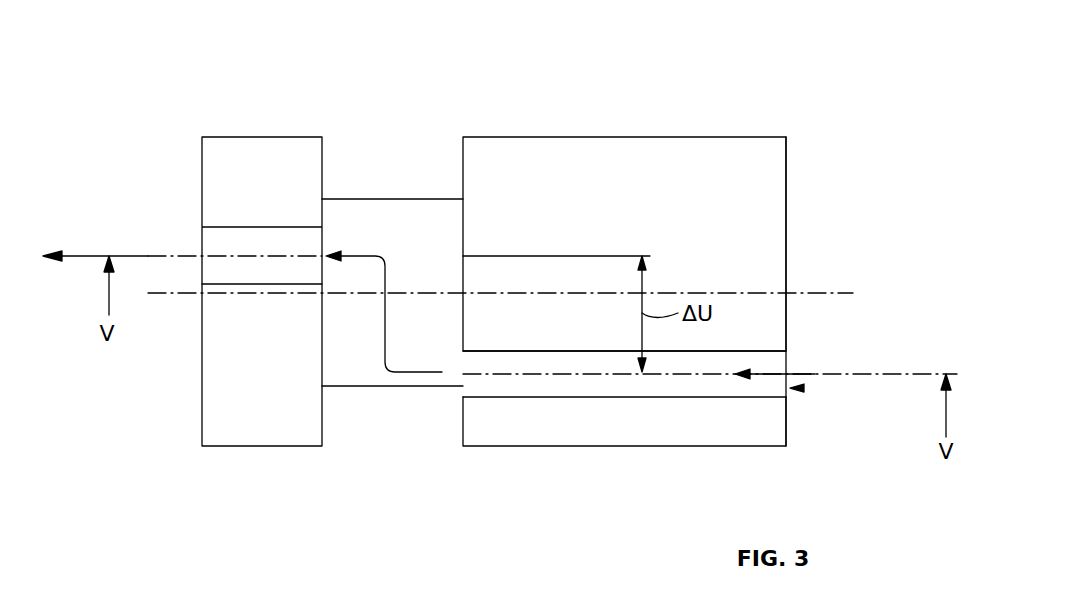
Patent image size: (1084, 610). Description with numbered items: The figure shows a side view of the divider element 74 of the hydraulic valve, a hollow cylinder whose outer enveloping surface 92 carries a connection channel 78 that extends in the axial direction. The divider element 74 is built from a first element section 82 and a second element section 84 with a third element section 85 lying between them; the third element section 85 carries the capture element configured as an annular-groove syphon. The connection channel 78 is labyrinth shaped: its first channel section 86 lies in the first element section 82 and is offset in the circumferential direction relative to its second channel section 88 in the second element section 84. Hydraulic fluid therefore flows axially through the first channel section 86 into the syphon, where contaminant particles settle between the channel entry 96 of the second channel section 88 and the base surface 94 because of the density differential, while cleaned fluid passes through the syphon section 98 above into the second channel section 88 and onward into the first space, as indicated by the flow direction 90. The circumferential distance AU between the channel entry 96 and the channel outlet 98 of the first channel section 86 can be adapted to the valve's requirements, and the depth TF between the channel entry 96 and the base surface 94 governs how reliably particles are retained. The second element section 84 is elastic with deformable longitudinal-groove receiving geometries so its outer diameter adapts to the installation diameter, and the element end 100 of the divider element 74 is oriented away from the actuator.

The divider element 74 is at (880, 142).
The connection channel 78 is at (804, 388).
The first element section 82 is at (624, 244).
The second element section 84 is at (262, 365).
The third element section 85 is at (384, 311).
The first channel section 86 is at (683, 380).
The second channel section 88 is at (273, 250).
The flow direction 90 is at (806, 374).
The enveloping surface 92 is at (603, 448).
The base surface 94 is at (392, 388).
The channel entry 96 is at (322, 237).
The channel outlet 98 is at (463, 383).
The element end 100 is at (786, 228).